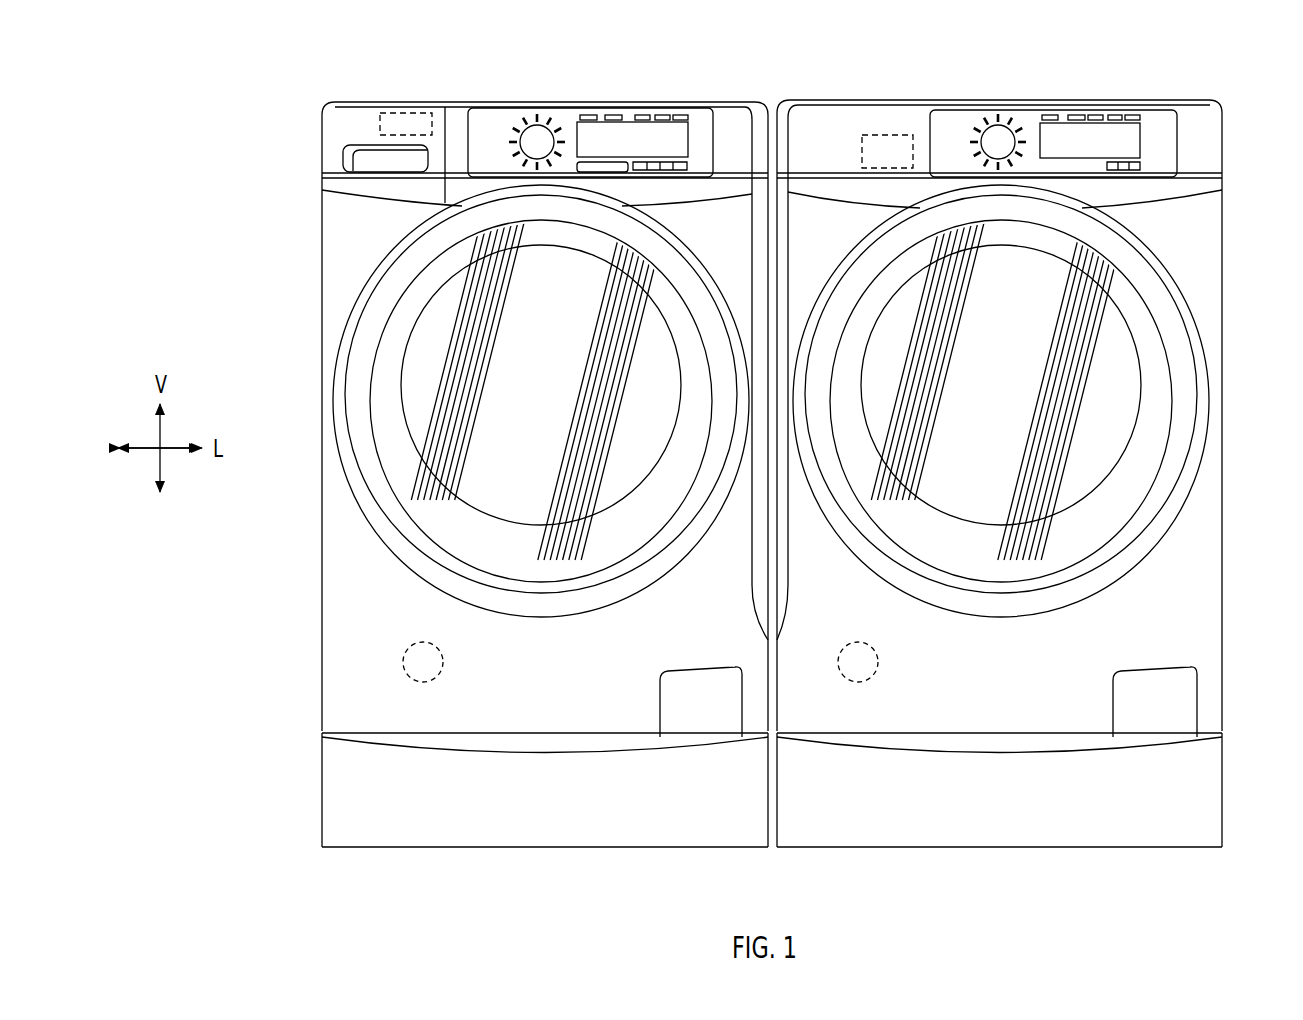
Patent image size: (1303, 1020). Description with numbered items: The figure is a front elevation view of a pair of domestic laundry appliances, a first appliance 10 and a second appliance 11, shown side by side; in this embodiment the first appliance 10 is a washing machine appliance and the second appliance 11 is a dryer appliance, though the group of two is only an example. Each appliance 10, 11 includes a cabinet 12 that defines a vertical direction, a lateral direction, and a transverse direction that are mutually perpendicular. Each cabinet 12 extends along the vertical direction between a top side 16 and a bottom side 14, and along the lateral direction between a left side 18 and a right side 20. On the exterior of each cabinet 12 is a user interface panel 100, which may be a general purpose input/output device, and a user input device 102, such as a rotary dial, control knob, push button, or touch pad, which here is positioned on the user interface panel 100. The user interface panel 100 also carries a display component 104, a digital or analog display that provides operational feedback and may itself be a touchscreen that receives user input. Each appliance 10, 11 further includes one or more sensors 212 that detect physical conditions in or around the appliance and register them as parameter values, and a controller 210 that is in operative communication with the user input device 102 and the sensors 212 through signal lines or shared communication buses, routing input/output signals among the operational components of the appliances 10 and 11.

The first appliance 10 is at (298, 90).
The second appliance 11 is at (1250, 140).
The cabinet 12 is at (337, 632).
The bottom side 14 is at (392, 852).
The top side 16 is at (374, 86).
The left side 18 is at (317, 790).
The right side 20 is at (761, 866).
The user interface panel 100 is at (567, 120).
The user input device 102 is at (533, 135).
The display component 104 is at (657, 133).
The controller 210 is at (414, 109).
The sensor 212 is at (445, 660).